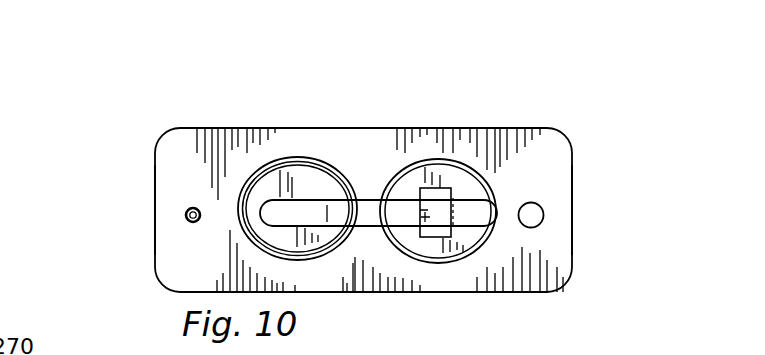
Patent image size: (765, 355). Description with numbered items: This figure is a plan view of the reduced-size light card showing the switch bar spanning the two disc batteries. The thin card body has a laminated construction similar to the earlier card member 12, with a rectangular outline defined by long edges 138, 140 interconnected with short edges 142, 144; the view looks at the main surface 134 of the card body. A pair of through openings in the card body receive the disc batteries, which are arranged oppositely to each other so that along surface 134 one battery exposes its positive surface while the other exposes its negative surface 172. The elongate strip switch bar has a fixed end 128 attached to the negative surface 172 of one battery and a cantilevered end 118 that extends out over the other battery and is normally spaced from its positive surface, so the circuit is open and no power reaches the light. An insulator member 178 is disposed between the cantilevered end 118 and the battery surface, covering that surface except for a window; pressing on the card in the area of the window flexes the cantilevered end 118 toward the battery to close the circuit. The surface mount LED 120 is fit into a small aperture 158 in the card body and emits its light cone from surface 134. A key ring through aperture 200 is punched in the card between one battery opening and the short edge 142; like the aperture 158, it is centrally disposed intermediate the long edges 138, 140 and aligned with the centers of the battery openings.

The card member 12 is at (403, 217).
The cantilevered end 118 is at (484, 213).
The surface mount LED 120 is at (192, 205).
The fixed end 128 is at (292, 212).
The main surface 134 is at (206, 262).
The long edge 138 is at (375, 128).
The long edge 140 is at (455, 292).
The short edge 142 is at (572, 165).
The short edge 144 is at (155, 190).
The through hole or aperture 158 is at (187, 220).
The negative surface 172 is at (256, 198).
The insulator member 178 is at (462, 192).
The through aperture 200 is at (541, 220).